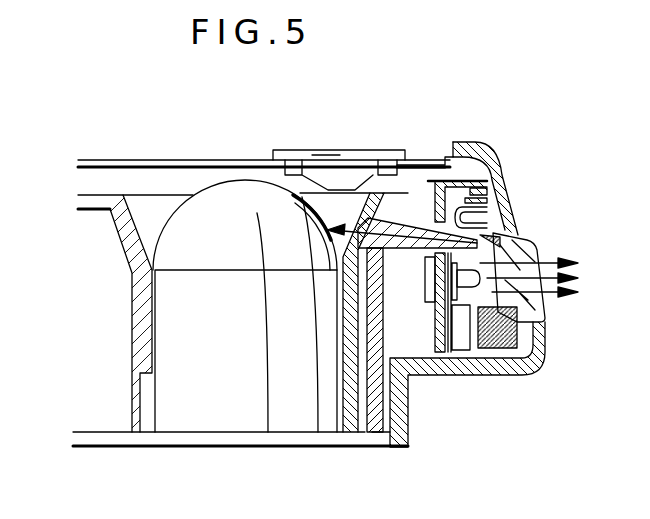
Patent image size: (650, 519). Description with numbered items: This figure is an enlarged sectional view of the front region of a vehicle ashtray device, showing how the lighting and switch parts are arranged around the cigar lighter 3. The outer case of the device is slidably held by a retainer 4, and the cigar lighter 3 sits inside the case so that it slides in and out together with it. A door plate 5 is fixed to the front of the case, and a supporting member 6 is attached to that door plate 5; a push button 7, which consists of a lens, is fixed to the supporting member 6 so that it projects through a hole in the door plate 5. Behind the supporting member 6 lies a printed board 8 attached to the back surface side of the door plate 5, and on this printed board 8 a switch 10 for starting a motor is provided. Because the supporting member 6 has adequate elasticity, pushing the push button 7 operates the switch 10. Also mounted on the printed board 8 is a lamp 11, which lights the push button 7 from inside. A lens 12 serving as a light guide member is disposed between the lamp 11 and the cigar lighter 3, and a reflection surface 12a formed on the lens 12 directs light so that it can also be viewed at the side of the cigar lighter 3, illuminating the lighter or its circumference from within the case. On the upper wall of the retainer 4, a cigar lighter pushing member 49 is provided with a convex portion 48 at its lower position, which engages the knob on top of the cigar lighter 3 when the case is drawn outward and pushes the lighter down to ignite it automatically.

The cigar lighter 3 is at (248, 413).
The retainer 4 is at (100, 162).
The door plate 5 is at (478, 143).
The supporting member 6 is at (495, 350).
The push button 7 is at (525, 238).
The printed board 8 is at (413, 195).
The switch 10 is at (462, 340).
The lamp 11 is at (508, 242).
The lens 12 is at (371, 216).
The reflection surface 12a is at (490, 215).
The convex portion 48 is at (310, 150).
The cigar lighter pushing member 49 is at (326, 150).